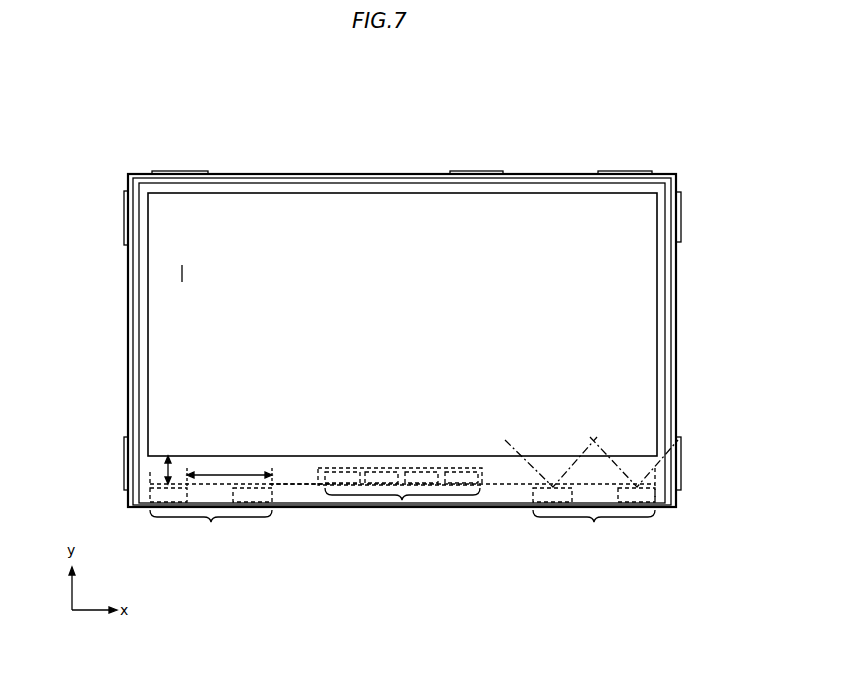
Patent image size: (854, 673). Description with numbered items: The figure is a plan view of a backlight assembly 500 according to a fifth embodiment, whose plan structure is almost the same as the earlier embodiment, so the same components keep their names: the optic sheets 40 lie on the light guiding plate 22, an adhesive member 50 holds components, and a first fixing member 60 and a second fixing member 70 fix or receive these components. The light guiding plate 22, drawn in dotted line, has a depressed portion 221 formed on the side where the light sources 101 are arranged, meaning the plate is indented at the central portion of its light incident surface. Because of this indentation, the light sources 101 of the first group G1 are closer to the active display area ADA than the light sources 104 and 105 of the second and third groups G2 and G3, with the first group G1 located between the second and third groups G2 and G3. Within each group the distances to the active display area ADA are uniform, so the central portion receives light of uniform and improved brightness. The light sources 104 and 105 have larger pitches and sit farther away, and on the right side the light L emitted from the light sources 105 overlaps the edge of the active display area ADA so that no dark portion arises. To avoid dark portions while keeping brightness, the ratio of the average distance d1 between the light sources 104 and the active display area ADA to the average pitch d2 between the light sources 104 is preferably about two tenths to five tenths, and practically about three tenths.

The backlight assembly 500 is at (412, 139).
The optic sheets 40 is at (545, 215).
The adhesive member 50 is at (660, 276).
The first fixing member 60 is at (672, 256).
The second fixing member 70 is at (678, 298).
The active display area ADA is at (182, 273).
The light L is at (637, 468).
The average distance d1 is at (165, 470).
The average pitch d2 is at (229, 471).
The light sources 104 is at (158, 492).
The second group G2 is at (211, 515).
The light guiding plate 22 is at (282, 470).
The light sources 101 is at (330, 475).
The first group G1 is at (400, 497).
The depressed portion 221 is at (443, 472).
The third group G3 is at (594, 516).
The light sources 105 is at (638, 495).